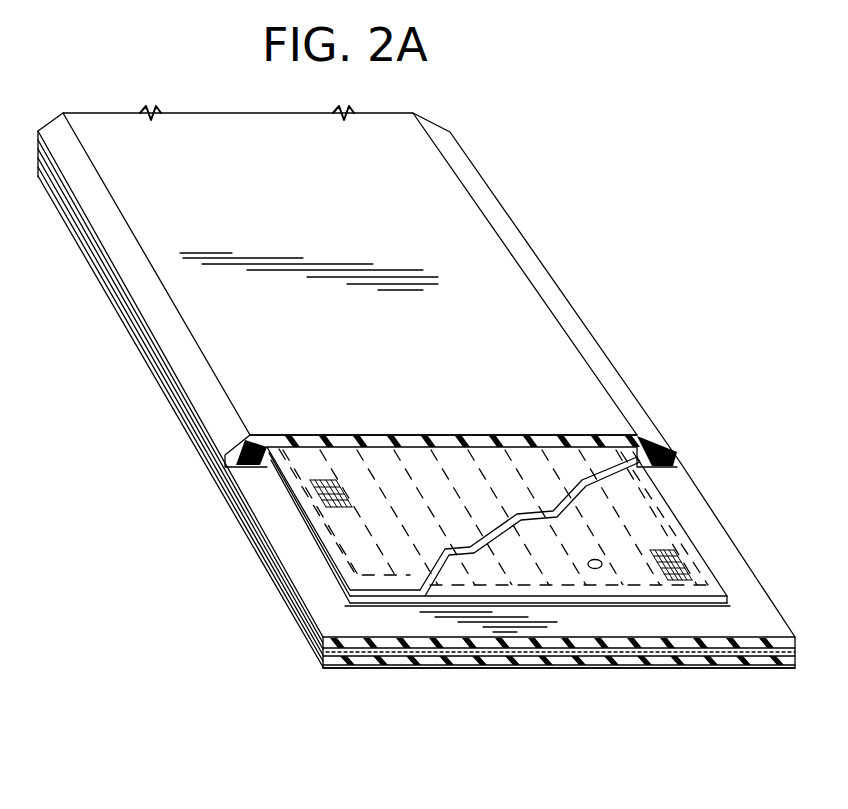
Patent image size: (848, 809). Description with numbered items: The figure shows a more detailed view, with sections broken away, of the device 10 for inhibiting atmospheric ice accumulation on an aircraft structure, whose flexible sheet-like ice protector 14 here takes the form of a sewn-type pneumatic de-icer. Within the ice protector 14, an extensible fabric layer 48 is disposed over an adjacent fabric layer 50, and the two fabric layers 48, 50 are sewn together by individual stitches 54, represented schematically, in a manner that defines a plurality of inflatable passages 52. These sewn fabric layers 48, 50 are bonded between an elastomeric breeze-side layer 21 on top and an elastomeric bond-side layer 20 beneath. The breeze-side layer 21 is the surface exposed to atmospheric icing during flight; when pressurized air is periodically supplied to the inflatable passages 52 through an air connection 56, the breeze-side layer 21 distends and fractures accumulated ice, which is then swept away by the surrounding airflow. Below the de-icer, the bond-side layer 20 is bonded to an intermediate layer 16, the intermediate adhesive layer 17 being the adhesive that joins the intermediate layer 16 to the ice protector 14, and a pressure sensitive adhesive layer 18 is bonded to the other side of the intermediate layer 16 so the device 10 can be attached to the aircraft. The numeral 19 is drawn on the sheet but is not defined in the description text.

The device 10 is at (538, 207).
The ice protector 14 is at (499, 286).
The breeze-side layer 21 is at (592, 440).
The inflatable passages 52 is at (345, 531).
The stitches 54 is at (332, 474).
The air connection 56 is at (600, 562).
The extensible fabric layer 48 is at (369, 597).
The fabric layer 50 is at (397, 604).
The bond-side layer 20 is at (611, 643).
The intermediate adhesive layer 17 is at (688, 651).
The intermediate layer 16 is at (441, 660).
The pressure sensitive adhesive layer 18 is at (549, 667).
The base bottom surface 19 is at (490, 670).